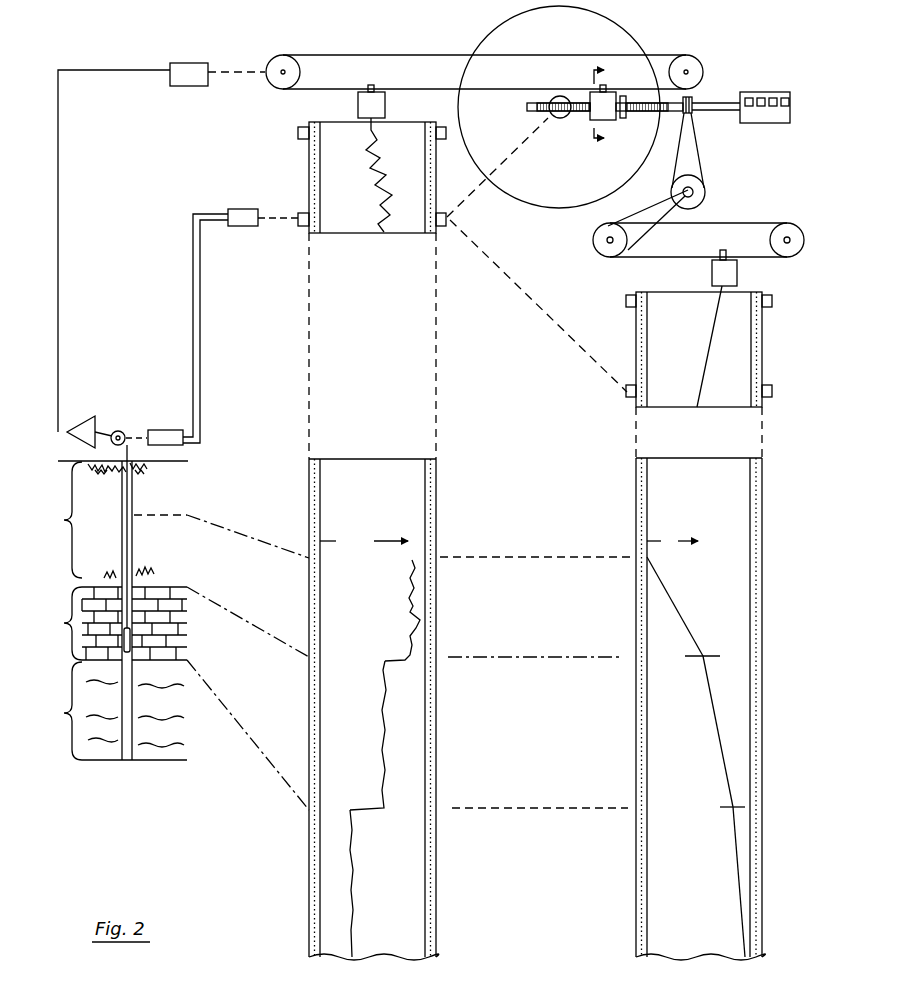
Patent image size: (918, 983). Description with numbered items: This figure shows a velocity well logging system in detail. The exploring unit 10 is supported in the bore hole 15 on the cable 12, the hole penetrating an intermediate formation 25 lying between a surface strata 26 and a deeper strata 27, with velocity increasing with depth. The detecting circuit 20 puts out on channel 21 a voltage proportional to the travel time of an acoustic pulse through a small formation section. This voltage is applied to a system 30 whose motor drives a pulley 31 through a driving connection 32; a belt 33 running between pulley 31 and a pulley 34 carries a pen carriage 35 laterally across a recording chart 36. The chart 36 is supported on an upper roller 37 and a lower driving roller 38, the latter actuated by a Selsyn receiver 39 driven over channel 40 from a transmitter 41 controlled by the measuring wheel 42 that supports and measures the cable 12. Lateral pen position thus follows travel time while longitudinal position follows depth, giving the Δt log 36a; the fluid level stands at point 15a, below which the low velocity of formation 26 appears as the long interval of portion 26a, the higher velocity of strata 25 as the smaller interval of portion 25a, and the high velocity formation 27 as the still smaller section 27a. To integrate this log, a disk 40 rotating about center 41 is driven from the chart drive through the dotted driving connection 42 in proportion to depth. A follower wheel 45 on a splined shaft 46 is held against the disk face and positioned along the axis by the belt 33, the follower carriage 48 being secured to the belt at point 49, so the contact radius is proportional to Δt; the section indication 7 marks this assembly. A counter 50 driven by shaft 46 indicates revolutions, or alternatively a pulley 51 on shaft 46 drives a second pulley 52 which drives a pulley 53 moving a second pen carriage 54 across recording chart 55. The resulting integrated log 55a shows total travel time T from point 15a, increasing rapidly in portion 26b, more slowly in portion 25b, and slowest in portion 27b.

The section line 7- 7 is at (609, 104).
The exploring unit 10 is at (178, 640).
The cable 12 is at (133, 542).
The bore hole 15 is at (122, 546).
The point 15a is at (122, 512).
The detecting circuit 20 is at (90, 420).
The channel 21 is at (58, 350).
The formation 25 is at (167, 613).
The portion of chart 36a 25a is at (383, 732).
The portion of chart 55a 25b is at (717, 734).
The surface strata 26 is at (54, 520).
The portion of chart 36a 26a is at (408, 600).
The portion of chart 55a 26b is at (678, 601).
The deeper strata 27 is at (167, 735).
The section of chart 36a 27a is at (352, 878).
The portion of chart 55a 27b is at (737, 875).
The system 30 is at (172, 86).
The pulley 31 is at (280, 60).
The driving connection 32 is at (222, 73).
The belt 33 is at (375, 55).
The pulley 34 is at (696, 60).
The pen carriage 35 is at (357, 102).
The recording chart 36 is at (322, 170).
The Δt log 36a is at (388, 457).
The upper roller 37 is at (298, 133).
The lower driving roller 38 is at (302, 226).
The Selsyn receiver 39 is at (245, 209).
The channel / disk 40 is at (200, 350).
The transmitter / center 41 is at (184, 447).
The measuring wheel / driving connection 42 is at (120, 434).
The follower wheel 45 is at (625, 118).
The splined shaft 46 is at (706, 112).
The follower carriage 48 is at (592, 120).
The point 49 is at (598, 88).
The counter 50 is at (761, 92).
The pulley 51 is at (692, 100).
The second pulley 52 is at (706, 192).
The pulley 53 is at (606, 256).
The second pen carriage 54 is at (712, 270).
The recording chart 55 is at (652, 332).
The integrated log 55a is at (718, 456).